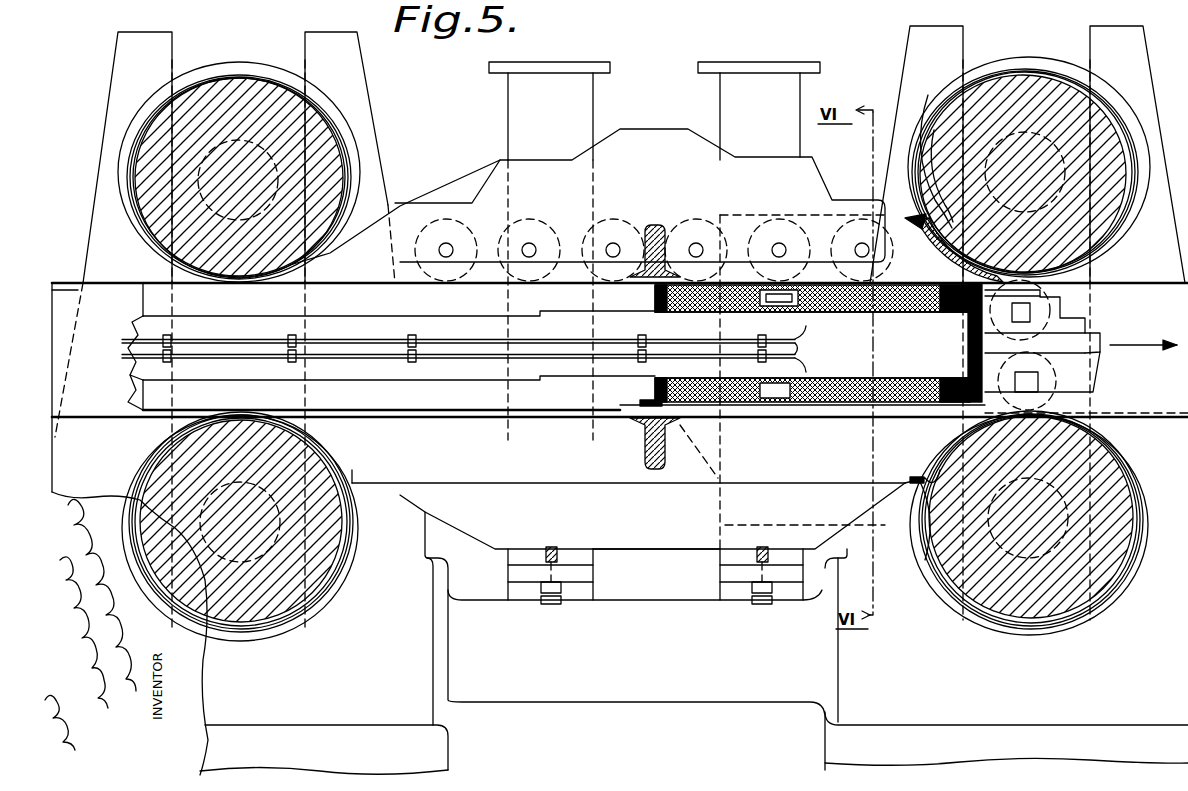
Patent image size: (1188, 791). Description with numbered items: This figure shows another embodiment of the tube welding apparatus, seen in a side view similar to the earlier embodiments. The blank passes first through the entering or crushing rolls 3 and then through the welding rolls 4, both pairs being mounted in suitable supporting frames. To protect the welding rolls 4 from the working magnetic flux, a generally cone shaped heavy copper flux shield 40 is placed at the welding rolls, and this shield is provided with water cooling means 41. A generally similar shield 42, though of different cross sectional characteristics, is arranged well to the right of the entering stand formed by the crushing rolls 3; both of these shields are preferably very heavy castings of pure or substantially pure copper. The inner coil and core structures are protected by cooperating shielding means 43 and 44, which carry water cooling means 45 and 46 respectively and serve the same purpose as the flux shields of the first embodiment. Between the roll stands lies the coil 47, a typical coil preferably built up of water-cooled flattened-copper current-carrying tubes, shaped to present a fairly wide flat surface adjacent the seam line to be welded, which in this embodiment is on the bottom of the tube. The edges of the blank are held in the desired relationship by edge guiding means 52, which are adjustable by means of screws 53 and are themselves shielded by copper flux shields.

The entering or crushing rolls 3 is at (330, 138).
The welding rolls 4 is at (1015, 85).
The cone shaped heavy copper flux shield 40 is at (940, 88).
The water cooling means 41 is at (938, 236).
The shield 42 is at (662, 247).
The shielding means 43 is at (1040, 297).
The shielding means 44 is at (655, 296).
The water cooling means 45 is at (968, 366).
The water cooling means 46 is at (663, 378).
The coil 47 is at (850, 404).
The edge guiding means 52 is at (668, 543).
The screws 53 is at (551, 604).